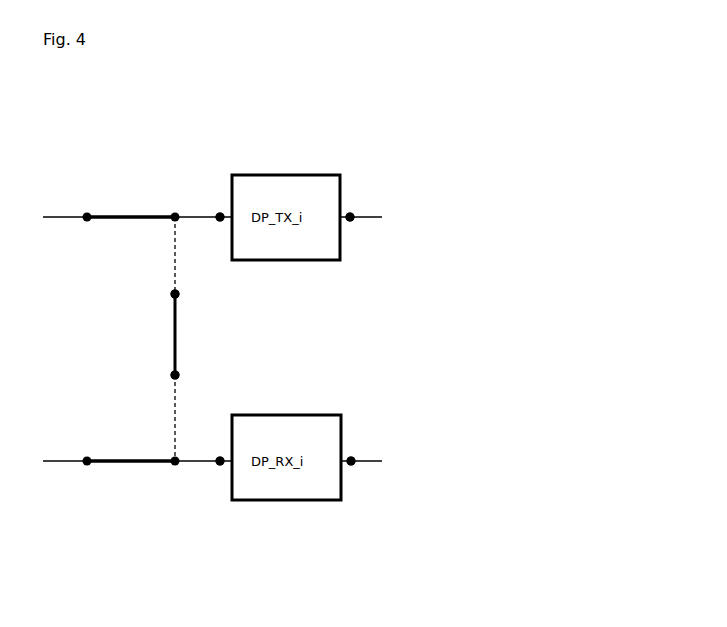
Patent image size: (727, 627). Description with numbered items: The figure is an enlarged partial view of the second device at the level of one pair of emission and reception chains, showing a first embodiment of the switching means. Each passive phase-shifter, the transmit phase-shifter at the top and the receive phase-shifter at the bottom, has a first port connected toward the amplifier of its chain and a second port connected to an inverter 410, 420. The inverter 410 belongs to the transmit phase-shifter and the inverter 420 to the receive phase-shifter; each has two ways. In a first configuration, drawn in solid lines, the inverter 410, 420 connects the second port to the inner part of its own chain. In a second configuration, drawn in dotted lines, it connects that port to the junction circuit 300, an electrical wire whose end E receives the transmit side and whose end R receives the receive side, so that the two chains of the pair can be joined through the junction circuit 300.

The junction circuit 300 is at (178, 325).
The inverter 410 is at (176, 262).
The inverter 420 is at (175, 408).
The end E is at (180, 294).
The end R is at (180, 375).